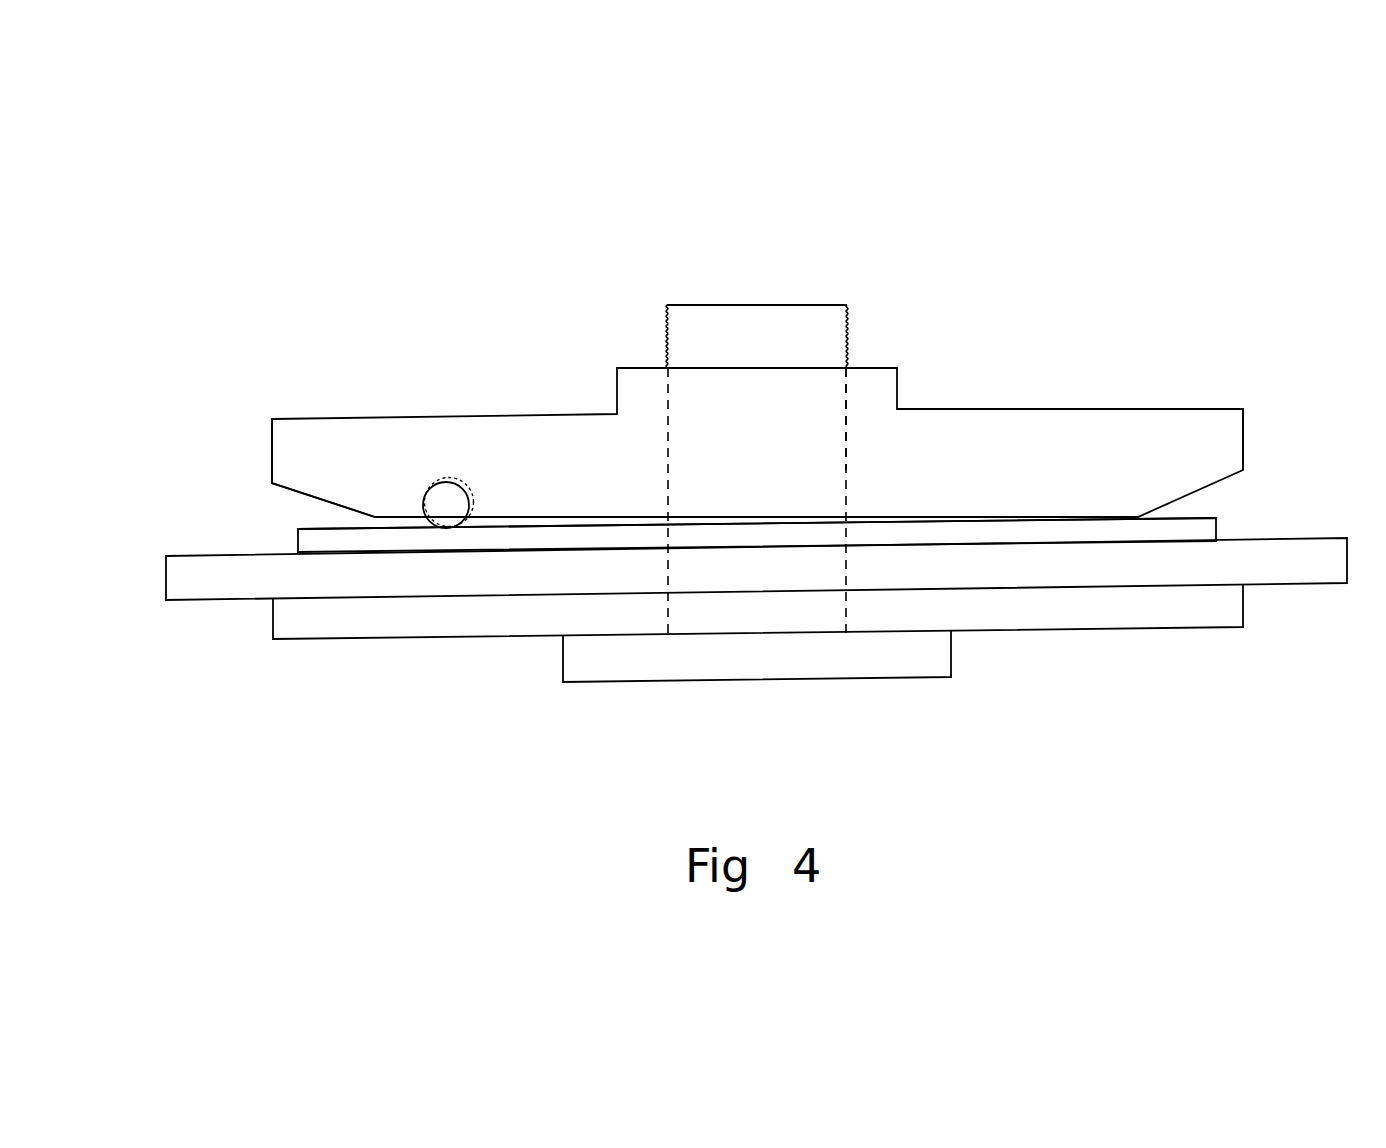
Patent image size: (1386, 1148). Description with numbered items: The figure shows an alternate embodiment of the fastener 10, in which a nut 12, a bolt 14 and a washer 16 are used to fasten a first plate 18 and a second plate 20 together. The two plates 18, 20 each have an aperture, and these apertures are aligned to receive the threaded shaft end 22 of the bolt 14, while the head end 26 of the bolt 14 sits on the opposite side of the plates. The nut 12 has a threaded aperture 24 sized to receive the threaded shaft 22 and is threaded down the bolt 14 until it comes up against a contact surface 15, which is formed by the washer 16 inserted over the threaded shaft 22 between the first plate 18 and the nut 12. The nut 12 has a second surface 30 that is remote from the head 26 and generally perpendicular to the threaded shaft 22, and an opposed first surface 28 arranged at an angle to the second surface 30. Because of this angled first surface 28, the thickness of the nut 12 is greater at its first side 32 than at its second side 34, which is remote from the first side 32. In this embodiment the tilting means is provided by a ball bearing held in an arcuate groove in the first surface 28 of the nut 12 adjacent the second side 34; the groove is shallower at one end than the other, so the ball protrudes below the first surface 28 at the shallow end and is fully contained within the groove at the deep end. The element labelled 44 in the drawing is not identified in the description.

The fastener 10 is at (1113, 190).
The nut 12 is at (1035, 425).
The bolt 14 is at (745, 470).
The contact surface 15 is at (1177, 518).
The washer 16 is at (1190, 531).
The first plate 18 is at (217, 590).
The second plate 20 is at (357, 618).
The threaded shaft end 22 is at (667, 322).
The threaded aperture 24 is at (847, 415).
The head end 26 is at (917, 652).
The first surface 28 is at (975, 517).
The second surface 30 is at (1155, 405).
The first side 32 is at (1250, 400).
The second side 34 is at (268, 418).
The ball 44 is at (407, 521).